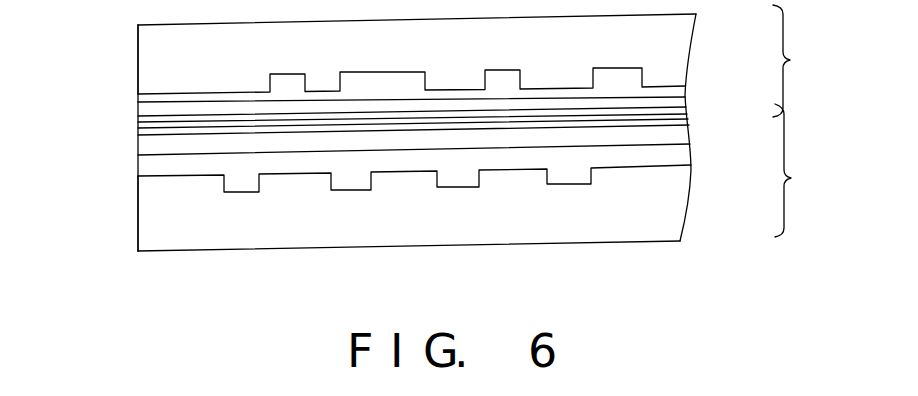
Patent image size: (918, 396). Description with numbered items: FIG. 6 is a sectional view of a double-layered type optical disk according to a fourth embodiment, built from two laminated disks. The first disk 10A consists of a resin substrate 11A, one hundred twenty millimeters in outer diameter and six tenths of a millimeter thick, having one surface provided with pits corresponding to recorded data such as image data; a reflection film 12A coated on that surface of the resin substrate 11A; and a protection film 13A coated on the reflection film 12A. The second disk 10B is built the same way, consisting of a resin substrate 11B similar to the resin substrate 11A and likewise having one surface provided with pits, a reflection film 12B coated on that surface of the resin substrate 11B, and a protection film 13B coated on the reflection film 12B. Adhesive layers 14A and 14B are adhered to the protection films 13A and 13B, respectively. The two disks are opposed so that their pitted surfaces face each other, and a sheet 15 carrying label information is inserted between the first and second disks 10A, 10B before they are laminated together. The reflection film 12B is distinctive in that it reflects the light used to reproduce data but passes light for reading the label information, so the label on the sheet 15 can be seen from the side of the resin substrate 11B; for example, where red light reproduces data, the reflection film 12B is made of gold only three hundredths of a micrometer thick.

The first disk 10A is at (810, 170).
The second disk 10B is at (805, 61).
The resin substrate 11A is at (150, 209).
The resin substrate 11B is at (150, 53).
The reflection film 12A is at (694, 168).
The reflection film 12B is at (138, 100).
The protection film 13A is at (692, 138).
The protection film 13B is at (694, 90).
The adhesive layer 14A is at (688, 119).
The adhesive layer 14B is at (689, 104).
The sheet 15 is at (687, 116).